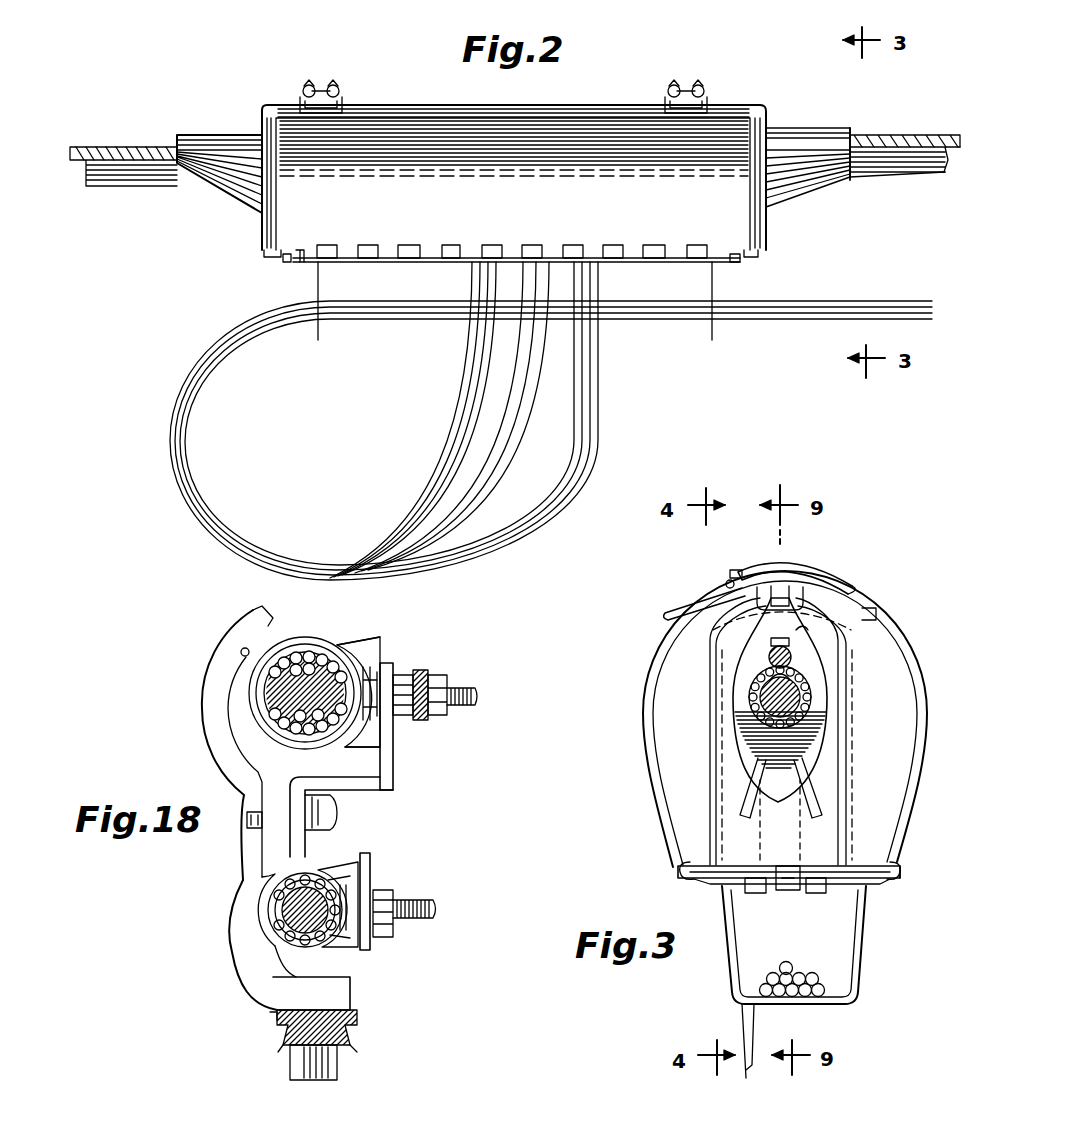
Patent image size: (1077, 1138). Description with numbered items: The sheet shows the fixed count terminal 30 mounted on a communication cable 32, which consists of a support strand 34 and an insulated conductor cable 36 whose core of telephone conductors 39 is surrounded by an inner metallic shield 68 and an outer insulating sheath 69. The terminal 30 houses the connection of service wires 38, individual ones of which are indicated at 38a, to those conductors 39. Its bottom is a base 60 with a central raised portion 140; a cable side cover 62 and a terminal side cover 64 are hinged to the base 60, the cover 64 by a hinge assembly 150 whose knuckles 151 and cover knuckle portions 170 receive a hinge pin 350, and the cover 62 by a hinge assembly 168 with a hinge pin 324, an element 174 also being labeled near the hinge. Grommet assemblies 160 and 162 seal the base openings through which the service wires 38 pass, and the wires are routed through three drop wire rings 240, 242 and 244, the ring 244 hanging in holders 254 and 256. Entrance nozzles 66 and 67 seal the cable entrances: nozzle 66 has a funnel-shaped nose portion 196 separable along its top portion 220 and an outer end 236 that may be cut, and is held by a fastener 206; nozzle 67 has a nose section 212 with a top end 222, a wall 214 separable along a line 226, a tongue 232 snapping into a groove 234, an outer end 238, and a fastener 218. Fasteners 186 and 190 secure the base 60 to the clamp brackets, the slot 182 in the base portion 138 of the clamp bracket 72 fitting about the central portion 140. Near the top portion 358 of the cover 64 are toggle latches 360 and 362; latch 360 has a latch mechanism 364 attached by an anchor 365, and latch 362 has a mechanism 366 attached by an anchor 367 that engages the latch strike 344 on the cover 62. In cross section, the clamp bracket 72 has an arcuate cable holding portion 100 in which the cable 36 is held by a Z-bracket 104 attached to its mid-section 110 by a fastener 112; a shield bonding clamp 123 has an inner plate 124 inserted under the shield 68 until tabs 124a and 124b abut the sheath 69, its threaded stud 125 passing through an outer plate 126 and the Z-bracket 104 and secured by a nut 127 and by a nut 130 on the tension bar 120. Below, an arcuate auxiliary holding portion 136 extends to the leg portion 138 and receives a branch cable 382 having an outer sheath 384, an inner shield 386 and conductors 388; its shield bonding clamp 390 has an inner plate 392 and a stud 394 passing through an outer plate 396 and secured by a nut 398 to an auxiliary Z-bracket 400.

In FIG. 2, the fixed count terminal 30 is at (790, 72).
In FIG. 3, the fixed count terminal 30 is at (906, 573).
In FIG. 2, the communication cable 32 is at (894, 128).
In FIG. 3, the communication cable 32 is at (768, 682).
In FIG. 2, the support strand 34 is at (958, 132).
In FIG. 3, the support strand 34 is at (770, 659).
In FIG. 2, the insulated conductor cable 36 is at (927, 170).
In FIG. 3, the insulated conductor cable 36 is at (768, 700).
In FIG. 18, the insulated conductor cable 36 is at (252, 690).
In FIG. 2, the service wires 38 is at (605, 383).
In FIG. 3, the service wires 38 is at (815, 966).
In FIG. 2, the individual wires 38a is at (466, 379).
In FIG. 18, the telephone conductors 39 is at (314, 654).
In FIG. 3, the base 60 is at (862, 884).
In FIG. 18, the base 60 is at (273, 1047).
In FIG. 3, the cable side cover 62 is at (926, 735).
In FIG. 2, the terminal side cover 64 is at (597, 123).
In FIG. 3, the terminal side cover 64 is at (637, 727).
In FIG. 2, the entrance nozzle 66 is at (197, 131).
In FIG. 2, the entrance nozzle 67 is at (823, 128).
In FIG. 3, the entrance nozzle 67 is at (846, 667).
In FIG. 3, the inner metallic shield 68 is at (812, 694).
In FIG. 18, the inner metallic shield 68 is at (262, 706).
In FIG. 3, the outer insulating sheath 69 is at (816, 735).
In FIG. 18, the outer insulating sheath 69 is at (270, 722).
In FIG. 18, the clamp bracket 72 is at (201, 664).
In FIG. 18, the cable holding portion 100 is at (250, 648).
In FIG. 18, the Z-shaped bracket 104 is at (388, 782).
In FIG. 18, the mid-section 110 is at (260, 838).
In FIG. 18, the fastener 112 is at (337, 816).
In FIG. 18, the tension bar 120 is at (422, 664).
In FIG. 18, the shield bonding clamp 123 is at (402, 648).
In FIG. 18, the inner plate 124 is at (320, 652).
In FIG. 18, the tab 124a is at (356, 648).
In FIG. 18, the tab 124b is at (372, 744).
In FIG. 18, the threaded stud 125 is at (468, 704).
In FIG. 18, the outer plate 126 is at (386, 662).
In FIG. 18, the nut 127 is at (402, 714).
In FIG. 18, the nut 130 is at (442, 682).
In FIG. 18, the auxiliary holding portion 136 is at (268, 908).
In FIG. 18, the base portion 138 is at (332, 990).
In FIG. 18, the central raised portion 140 is at (348, 1025).
In FIG. 2, the knuckles 150 is at (416, 263).
In FIG. 2, the hinge assembly 151 is at (392, 228).
In FIG. 3, the hinge assembly 151 is at (668, 875).
In FIG. 2, the grommet assembly 160 is at (677, 264).
In FIG. 3, the grommet assembly 160 is at (710, 884).
In FIG. 2, the grommet assembly 162 is at (338, 264).
In FIG. 3, the hinge assembly 168 is at (906, 874).
In FIG. 2, the knuckle portions 170 is at (393, 266).
In FIG. 2, the clip 174 is at (443, 243).
In FIG. 18, the slot 182 is at (290, 1027).
In FIG. 2, the fastener 186 is at (729, 263).
In FIG. 3, the fastener 186 is at (793, 892).
In FIG. 2, the fastener 190 is at (302, 271).
In FIG. 18, the fastener 190 is at (338, 1066).
In FIG. 2, the funnel-shaped nose portion 196 is at (215, 183).
In FIG. 2, the fastener 206 is at (272, 255).
In FIG. 2, the funnel-shaped nose section 212 is at (824, 184).
In FIG. 3, the funnel-shaped nose section 212 is at (757, 716).
In FIG. 3, the wall portion 214 is at (822, 831).
In FIG. 2, the fastener 218 is at (762, 253).
In FIG. 3, the fastener 218 is at (788, 878).
In FIG. 2, the top portion 220 is at (220, 134).
In FIG. 3, the top portion 222 is at (793, 634).
In FIG. 3, the line 226 is at (777, 638).
In FIG. 3, the tongue 232 is at (772, 644).
In FIG. 3, the groove 234 is at (798, 640).
In FIG. 2, the outer end 236 is at (172, 162).
In FIG. 2, the outer end 238 is at (862, 136).
In FIG. 2, the drop wire ring 240 is at (318, 340).
In FIG. 2, the drop wire ring 242 is at (507, 323).
In FIG. 2, the drop wire ring 244 is at (713, 338).
In FIG. 3, the drop wire ring 244 is at (852, 990).
In FIG. 3, the holder 254 is at (812, 894).
In FIG. 3, the holder 256 is at (765, 894).
In FIG. 3, the hinge pin 324 is at (902, 845).
In FIG. 3, the latch strike 344 is at (851, 585).
In FIG. 2, the hinge pin 350 is at (288, 263).
In FIG. 3, the hinge pin 350 is at (686, 854).
In FIG. 2, the top portion 358 is at (488, 115).
In FIG. 2, the toggle latch 360 is at (336, 90).
In FIG. 2, the toggle latch 362 is at (687, 89).
In FIG. 3, the toggle latch 362 is at (745, 570).
In FIG. 2, the latch mechanism 364 is at (313, 101).
In FIG. 2, the toggle latch anchor 365 is at (310, 86).
In FIG. 2, the toggle latch mechanism 366 is at (712, 96).
In FIG. 3, the toggle latch mechanism 366 is at (694, 610).
In FIG. 2, the anchor 367 is at (670, 92).
In FIG. 3, the anchor 367 is at (738, 578).
In FIG. 18, the branch cable 382 is at (278, 893).
In FIG. 18, the outer insulating sheath 384 is at (275, 923).
In FIG. 18, the inner metallic shield 386 is at (274, 942).
In FIG. 18, the telephone conductors 388 is at (302, 944).
In FIG. 18, the shield bonding clamp 390 is at (352, 874).
In FIG. 18, the inner plate 392 is at (320, 888).
In FIG. 18, the threaded stud 394 is at (442, 911).
In FIG. 18, the outer plate 396 is at (358, 905).
In FIG. 18, the nut 398 is at (386, 934).
In FIG. 18, the auxiliary Z-bracket 400 is at (369, 948).